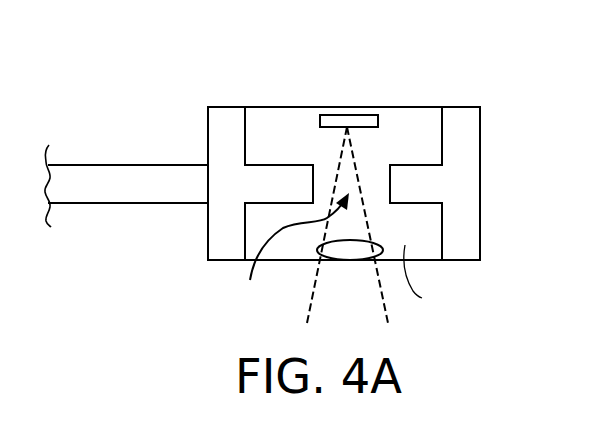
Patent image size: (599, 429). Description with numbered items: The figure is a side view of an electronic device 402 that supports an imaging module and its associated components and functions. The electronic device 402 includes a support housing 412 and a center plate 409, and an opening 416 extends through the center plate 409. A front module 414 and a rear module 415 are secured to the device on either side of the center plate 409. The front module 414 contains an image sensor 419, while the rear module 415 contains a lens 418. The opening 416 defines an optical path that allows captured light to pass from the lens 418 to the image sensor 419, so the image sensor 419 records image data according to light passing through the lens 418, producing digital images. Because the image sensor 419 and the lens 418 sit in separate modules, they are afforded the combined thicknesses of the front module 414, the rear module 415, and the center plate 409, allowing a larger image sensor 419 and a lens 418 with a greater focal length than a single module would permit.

The electronic device 402 is at (293, 80).
The center plate 409 is at (288, 195).
The support housing 412 is at (168, 141).
The front module 414 is at (415, 117).
The rear module 415 is at (430, 277).
The opening 416 is at (287, 252).
The lens 418 is at (353, 252).
The image sensor 419 is at (343, 118).